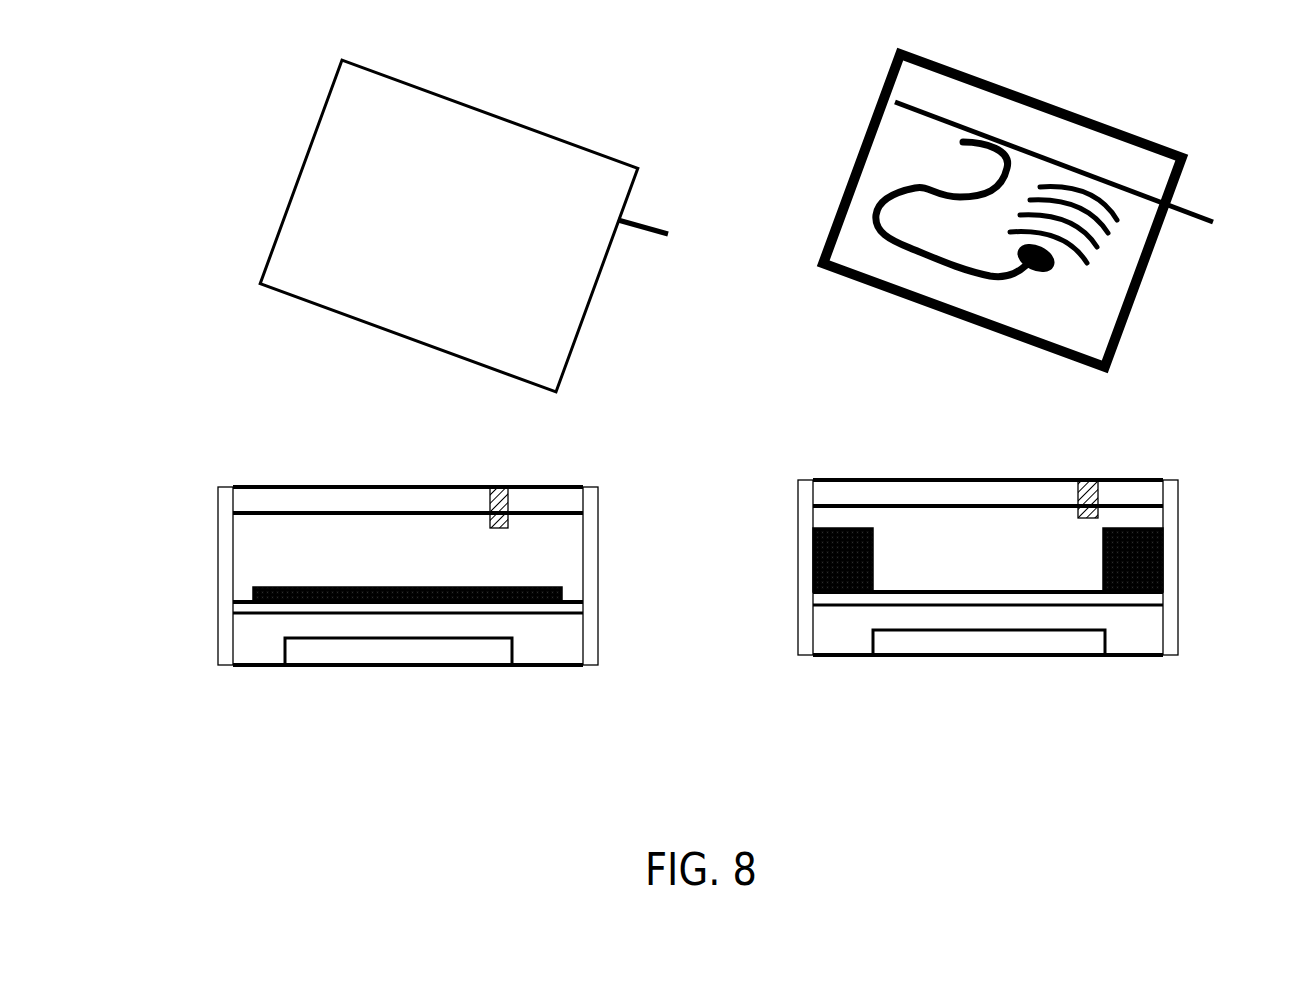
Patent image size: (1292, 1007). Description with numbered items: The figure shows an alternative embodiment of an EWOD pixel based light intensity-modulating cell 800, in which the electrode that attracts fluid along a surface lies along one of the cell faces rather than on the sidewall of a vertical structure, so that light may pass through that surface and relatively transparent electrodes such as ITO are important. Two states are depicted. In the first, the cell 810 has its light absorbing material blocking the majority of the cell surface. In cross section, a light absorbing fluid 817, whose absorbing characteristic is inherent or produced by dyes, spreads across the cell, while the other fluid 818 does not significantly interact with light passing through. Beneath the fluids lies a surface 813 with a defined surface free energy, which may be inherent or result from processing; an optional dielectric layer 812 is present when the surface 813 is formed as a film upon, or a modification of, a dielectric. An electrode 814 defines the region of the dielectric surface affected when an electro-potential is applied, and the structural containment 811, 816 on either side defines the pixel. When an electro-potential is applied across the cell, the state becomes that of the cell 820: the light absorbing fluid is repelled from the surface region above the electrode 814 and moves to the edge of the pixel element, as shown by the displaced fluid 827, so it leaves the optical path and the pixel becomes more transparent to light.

The EWOD pixel based light intensity-modulating cell 800 is at (655, 215).
The cell with light absorbing material blocking the cell surface 810 is at (395, 392).
The cell with electro-potential applied 820 is at (957, 404).
The structural containment 811 is at (162, 576).
The optional dielectric layer 812 is at (408, 701).
The surface with defined surface free energy 813 is at (337, 641).
The electrode 814 is at (598, 692).
The structural containment 816 is at (659, 576).
The light absorbing fluid 817 is at (475, 628).
The non-interacting fluid 818 is at (421, 615).
The repelled fluid at pixel edge 827 is at (868, 547).